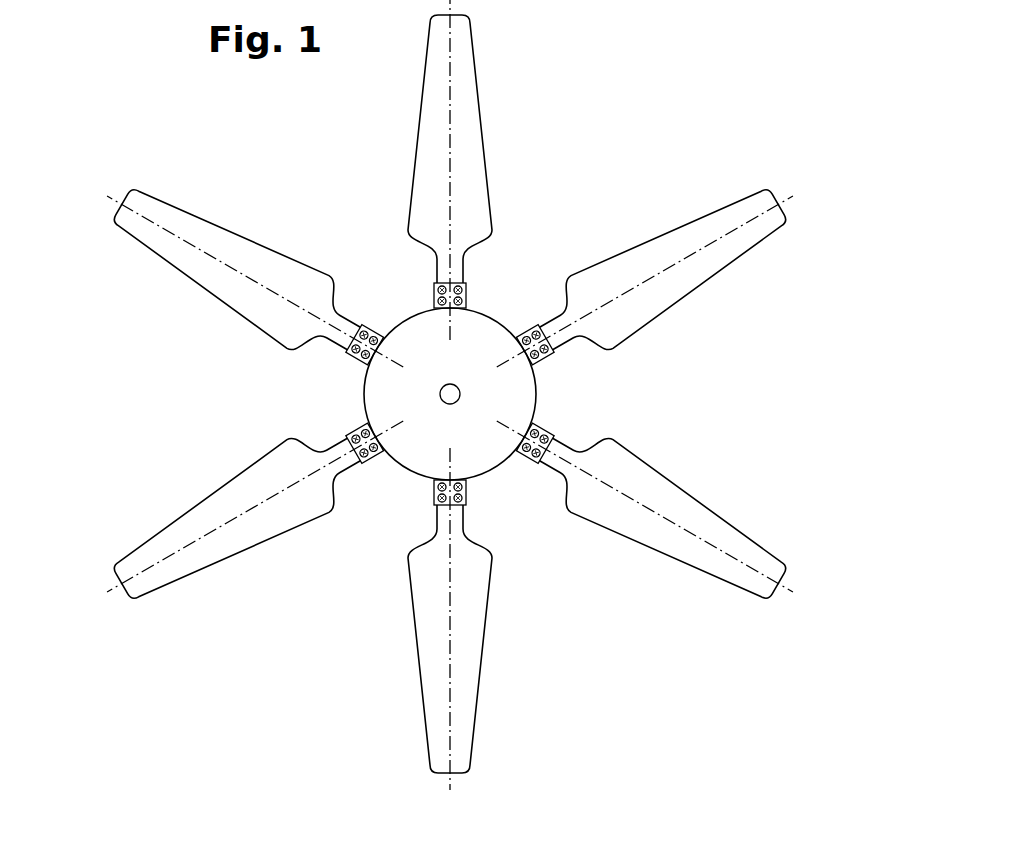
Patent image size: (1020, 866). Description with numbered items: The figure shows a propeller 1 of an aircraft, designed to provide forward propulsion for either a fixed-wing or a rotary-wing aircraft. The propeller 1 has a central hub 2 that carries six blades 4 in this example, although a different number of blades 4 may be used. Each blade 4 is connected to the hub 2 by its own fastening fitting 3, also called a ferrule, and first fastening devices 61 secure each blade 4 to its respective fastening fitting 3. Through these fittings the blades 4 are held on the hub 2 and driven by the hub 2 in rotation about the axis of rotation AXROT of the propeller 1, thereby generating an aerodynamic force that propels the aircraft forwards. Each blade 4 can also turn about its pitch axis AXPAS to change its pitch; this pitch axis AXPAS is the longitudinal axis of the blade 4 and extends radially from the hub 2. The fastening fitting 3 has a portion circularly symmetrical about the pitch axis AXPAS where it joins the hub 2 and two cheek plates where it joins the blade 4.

The propeller 1 is at (286, 683).
The hub 2 is at (534, 403).
The fastening fitting 3 is at (467, 296).
The blade 4 is at (433, 141).
The first fastening devices 61 is at (437, 300).
The pitch axis AXPAS is at (453, 85).
The axis of rotation AXROT is at (452, 394).